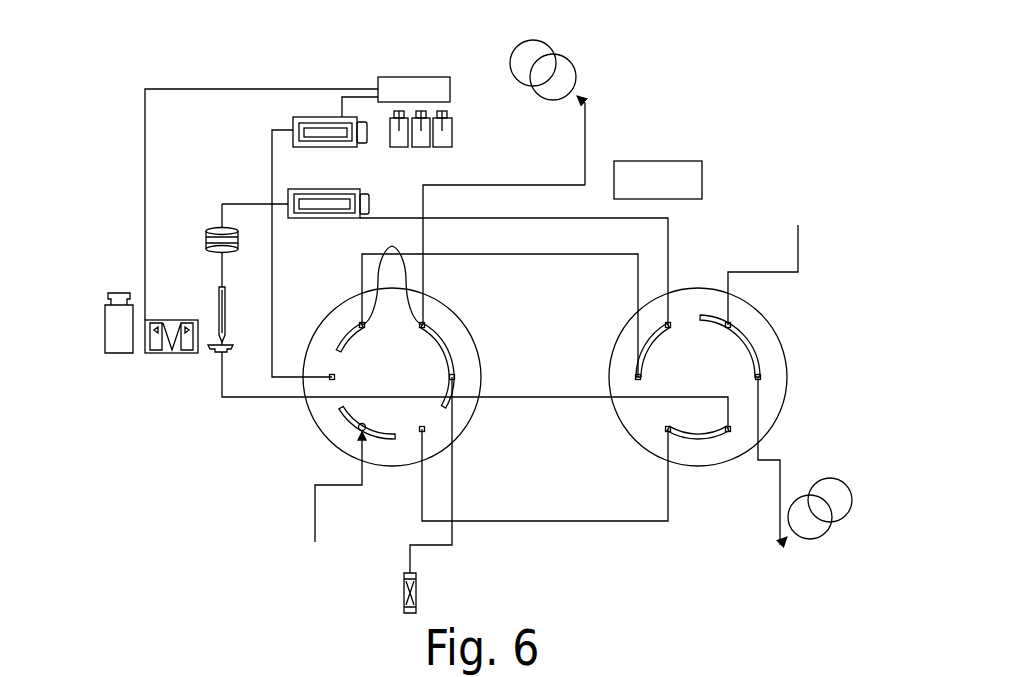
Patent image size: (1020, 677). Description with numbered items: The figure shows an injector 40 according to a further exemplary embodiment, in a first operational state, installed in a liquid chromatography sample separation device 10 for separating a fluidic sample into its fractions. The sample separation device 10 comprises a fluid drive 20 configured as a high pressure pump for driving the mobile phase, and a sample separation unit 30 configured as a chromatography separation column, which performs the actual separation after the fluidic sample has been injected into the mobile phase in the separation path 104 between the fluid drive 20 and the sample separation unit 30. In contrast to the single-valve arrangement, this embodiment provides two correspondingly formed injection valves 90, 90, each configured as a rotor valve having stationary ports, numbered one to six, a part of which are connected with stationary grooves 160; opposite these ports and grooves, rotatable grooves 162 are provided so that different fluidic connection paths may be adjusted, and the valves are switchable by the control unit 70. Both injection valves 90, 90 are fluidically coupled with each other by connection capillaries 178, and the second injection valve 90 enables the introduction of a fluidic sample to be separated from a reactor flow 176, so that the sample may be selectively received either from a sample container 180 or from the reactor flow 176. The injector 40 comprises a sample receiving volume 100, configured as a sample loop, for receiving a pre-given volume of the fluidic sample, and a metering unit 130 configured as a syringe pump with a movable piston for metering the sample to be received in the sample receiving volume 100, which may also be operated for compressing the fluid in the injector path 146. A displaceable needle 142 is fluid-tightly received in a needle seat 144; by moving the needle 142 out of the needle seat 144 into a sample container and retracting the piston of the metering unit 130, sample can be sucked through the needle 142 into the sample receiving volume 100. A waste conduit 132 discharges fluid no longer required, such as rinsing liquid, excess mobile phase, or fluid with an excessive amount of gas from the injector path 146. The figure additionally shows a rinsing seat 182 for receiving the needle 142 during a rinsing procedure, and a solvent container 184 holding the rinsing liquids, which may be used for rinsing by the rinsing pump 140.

The sample separation device 10 is at (748, 89).
The fluid drive 20 is at (534, 40).
The sample separation unit 30 is at (404, 589).
The injector 40 is at (302, 464).
The control unit 70 is at (658, 180).
The injection valve 90 is at (472, 333).
The sample receiving volume 100 is at (160, 225).
The separation path 104 is at (485, 185).
The metering unit 130 is at (343, 189).
The waste conduit 132 is at (314, 513).
The rinsing pump 140 is at (305, 117).
The needle 142 is at (217, 298).
The needle seat 144 is at (216, 354).
The injector path 146 is at (243, 203).
The stationary grooves 160 is at (392, 247).
The rotatable grooves 162 is at (366, 409).
The reactor flow 176 is at (781, 556).
The connection capillaries 178 is at (543, 256).
The sample container 180 is at (110, 294).
The rinsing seat 182 is at (173, 354).
The solvent container 184 is at (442, 111).